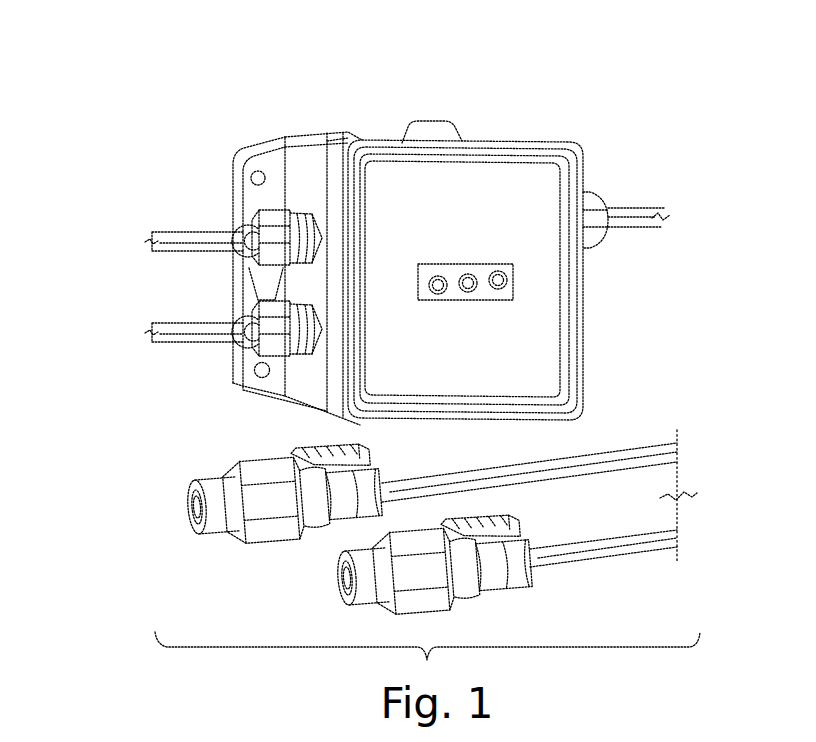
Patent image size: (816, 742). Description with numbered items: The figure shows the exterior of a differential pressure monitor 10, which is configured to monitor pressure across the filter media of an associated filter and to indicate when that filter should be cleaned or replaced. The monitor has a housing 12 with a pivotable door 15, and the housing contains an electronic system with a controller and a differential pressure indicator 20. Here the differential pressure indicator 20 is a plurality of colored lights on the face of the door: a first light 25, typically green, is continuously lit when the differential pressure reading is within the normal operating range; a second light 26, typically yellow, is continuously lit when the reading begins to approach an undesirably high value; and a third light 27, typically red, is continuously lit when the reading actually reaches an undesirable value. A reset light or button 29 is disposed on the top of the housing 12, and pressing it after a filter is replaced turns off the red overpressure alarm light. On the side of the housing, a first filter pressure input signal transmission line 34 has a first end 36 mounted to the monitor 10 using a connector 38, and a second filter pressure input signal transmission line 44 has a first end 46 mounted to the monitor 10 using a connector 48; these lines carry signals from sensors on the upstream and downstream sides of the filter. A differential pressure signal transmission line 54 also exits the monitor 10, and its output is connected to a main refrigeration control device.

The differential pressure monitor 10 is at (290, 78).
The housing 12 is at (303, 153).
The pivotable door 15 is at (340, 380).
The differential pressure indicator 20 is at (588, 207).
The first light 25 is at (440, 290).
The second light 26 is at (470, 288).
The third light 27 is at (500, 282).
The reset light or button 29 is at (431, 133).
The first filter pressure input signal transmission line 34 is at (628, 455).
The first end 36 is at (237, 238).
The connector 38 is at (278, 227).
The second filter pressure input signal transmission line 44 is at (640, 538).
The first end 46 is at (243, 332).
The connector 48 is at (275, 323).
The differential pressure signal transmission line 54 is at (633, 215).